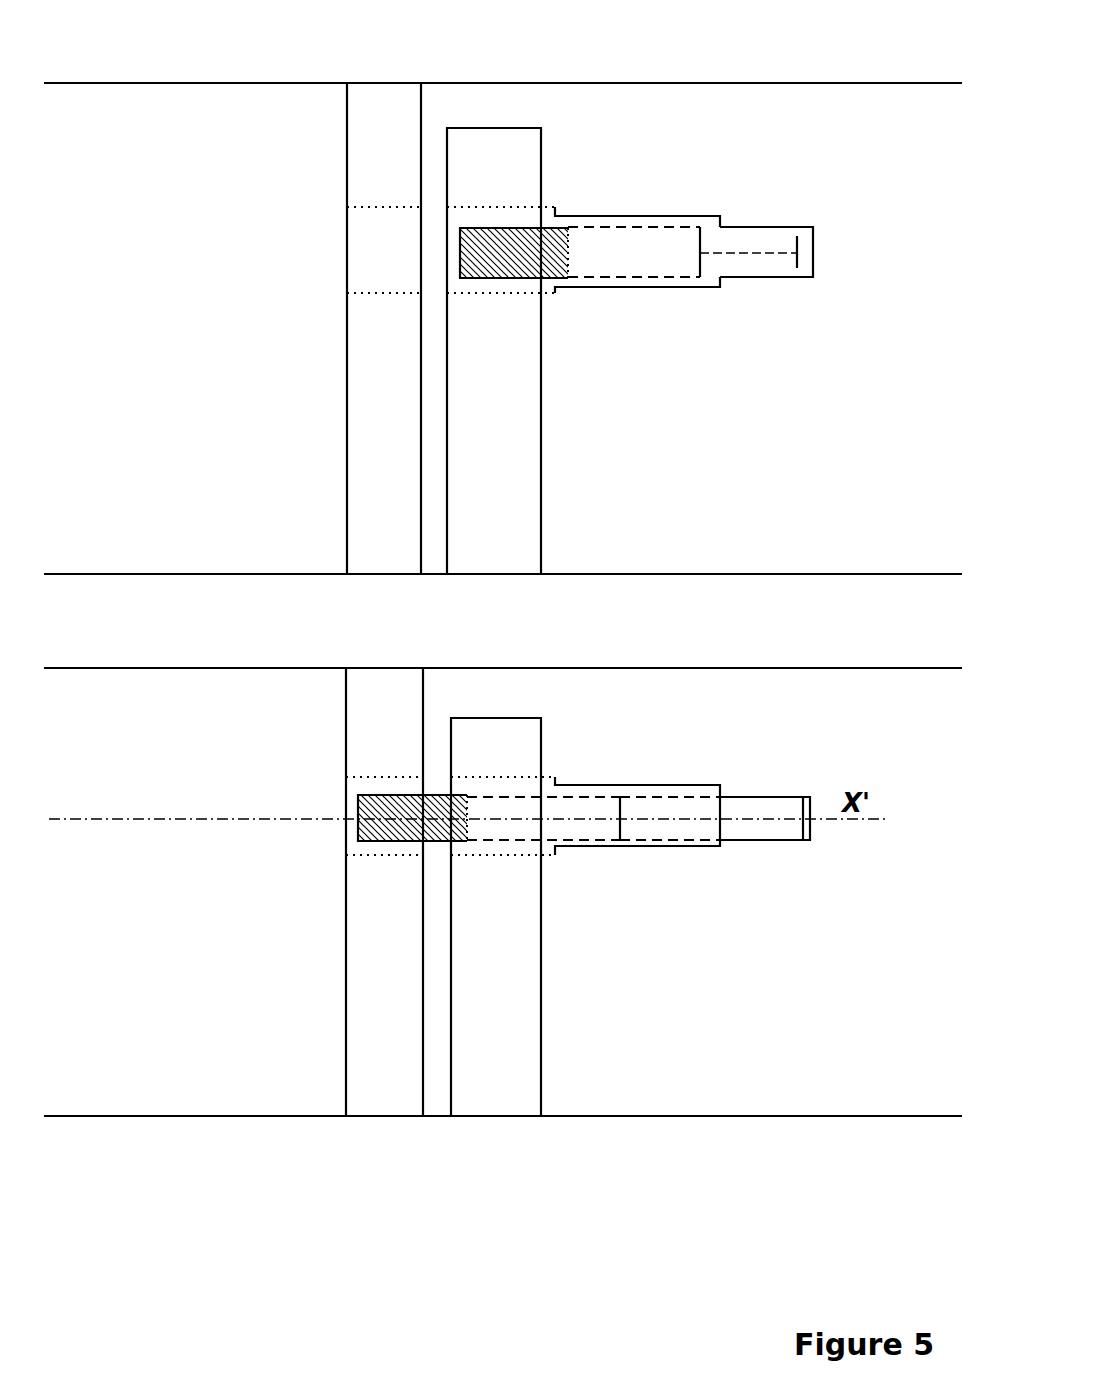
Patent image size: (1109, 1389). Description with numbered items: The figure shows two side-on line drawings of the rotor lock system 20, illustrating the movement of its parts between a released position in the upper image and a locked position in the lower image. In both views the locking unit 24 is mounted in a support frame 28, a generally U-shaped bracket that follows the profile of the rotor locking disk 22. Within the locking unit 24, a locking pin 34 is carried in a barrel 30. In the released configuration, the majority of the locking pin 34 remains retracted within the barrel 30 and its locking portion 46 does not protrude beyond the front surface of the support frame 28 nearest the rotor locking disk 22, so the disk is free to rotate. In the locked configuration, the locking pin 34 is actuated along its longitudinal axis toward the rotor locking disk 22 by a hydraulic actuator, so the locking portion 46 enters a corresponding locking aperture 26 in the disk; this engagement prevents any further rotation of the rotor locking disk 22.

The rotor lock system 20 is at (510, 1146).
The rotor locking disk 22 is at (372, 98).
The locking unit 24 is at (620, 286).
The locking aperture 26 is at (363, 247).
The support frame 28 is at (486, 127).
The barrel 30 is at (680, 218).
The locking pin 34 is at (580, 230).
The locking portion 46 is at (513, 258).